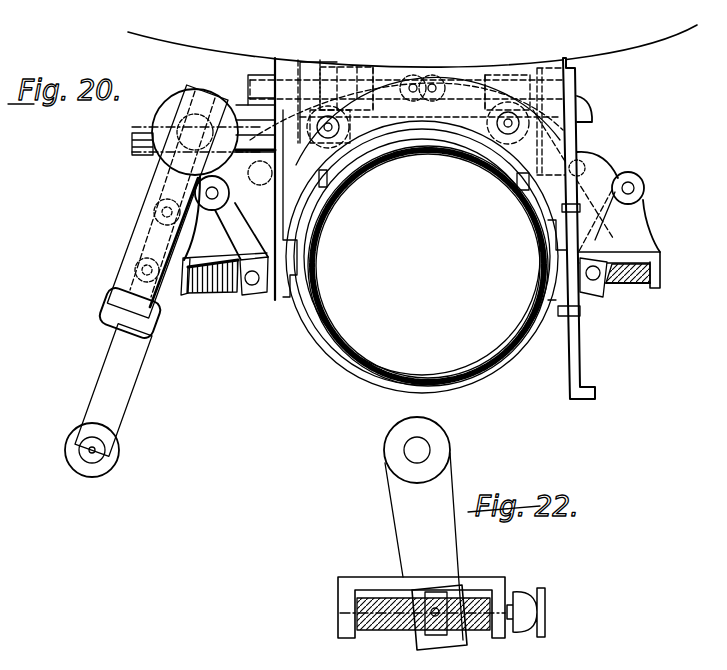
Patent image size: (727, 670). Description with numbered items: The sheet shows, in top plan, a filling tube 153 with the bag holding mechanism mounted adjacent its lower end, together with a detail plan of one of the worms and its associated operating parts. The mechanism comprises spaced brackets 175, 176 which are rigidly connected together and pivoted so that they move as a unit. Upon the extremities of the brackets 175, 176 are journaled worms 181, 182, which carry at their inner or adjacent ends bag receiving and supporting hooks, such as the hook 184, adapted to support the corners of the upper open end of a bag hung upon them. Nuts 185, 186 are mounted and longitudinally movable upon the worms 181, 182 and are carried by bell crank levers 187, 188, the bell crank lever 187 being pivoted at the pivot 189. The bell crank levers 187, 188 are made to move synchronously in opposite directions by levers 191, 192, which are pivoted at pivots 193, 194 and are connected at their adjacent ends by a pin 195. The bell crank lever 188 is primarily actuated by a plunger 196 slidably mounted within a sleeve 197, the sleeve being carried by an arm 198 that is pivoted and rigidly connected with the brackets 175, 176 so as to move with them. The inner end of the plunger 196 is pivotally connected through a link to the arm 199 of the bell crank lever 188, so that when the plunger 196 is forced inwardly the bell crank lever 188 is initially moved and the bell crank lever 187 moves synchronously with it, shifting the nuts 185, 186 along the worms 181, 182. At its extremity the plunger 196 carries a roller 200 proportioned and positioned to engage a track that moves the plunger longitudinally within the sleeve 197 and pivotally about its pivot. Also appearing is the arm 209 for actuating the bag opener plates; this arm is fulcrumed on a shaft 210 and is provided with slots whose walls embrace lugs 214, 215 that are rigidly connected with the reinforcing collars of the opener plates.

In FIG. 20, the filling tube 153 is at (468, 368).
In FIG. 20, the bracket 175 is at (637, 239).
In FIG. 20, the bracket 176 is at (184, 295).
In FIG. 22, the bracket 176 is at (357, 580).
In FIG. 20, the worm 181 is at (638, 288).
In FIG. 20, the worm 182 is at (222, 294).
In FIG. 22, the worm 182 is at (392, 631).
In FIG. 22, the bag receiving and supporting hook 184 is at (546, 611).
In FIG. 20, the nut 185 is at (595, 297).
In FIG. 20, the nut 186 is at (258, 295).
In FIG. 22, the nut 186 is at (454, 627).
In FIG. 20, the bell crank lever 187 is at (622, 284).
In FIG. 20, the bell crank lever 188 is at (138, 243).
In FIG. 22, the bell crank lever 188 is at (424, 546).
In FIG. 20, the pivot 189 is at (645, 188).
In FIG. 20, the lever 191 is at (488, 72).
In FIG. 20, the lever 192 is at (386, 96).
In FIG. 20, the pivot 193 is at (509, 124).
In FIG. 20, the pivot 194 is at (322, 100).
In FIG. 20, the pin 195 is at (427, 74).
In FIG. 20, the plunger 196 is at (188, 188).
In FIG. 22, the plunger 196 is at (408, 453).
In FIG. 20, the sleeve 197 is at (137, 263).
In FIG. 20, the arm 198 is at (250, 106).
In FIG. 20, the arm 199 is at (186, 192).
In FIG. 20, the roller 200 is at (118, 453).
In FIG. 20, the arm 209 is at (561, 246).
In FIG. 20, the shaft 210 is at (580, 86).
In FIG. 20, the lug 214 is at (566, 317).
In FIG. 20, the lug 215 is at (580, 208).